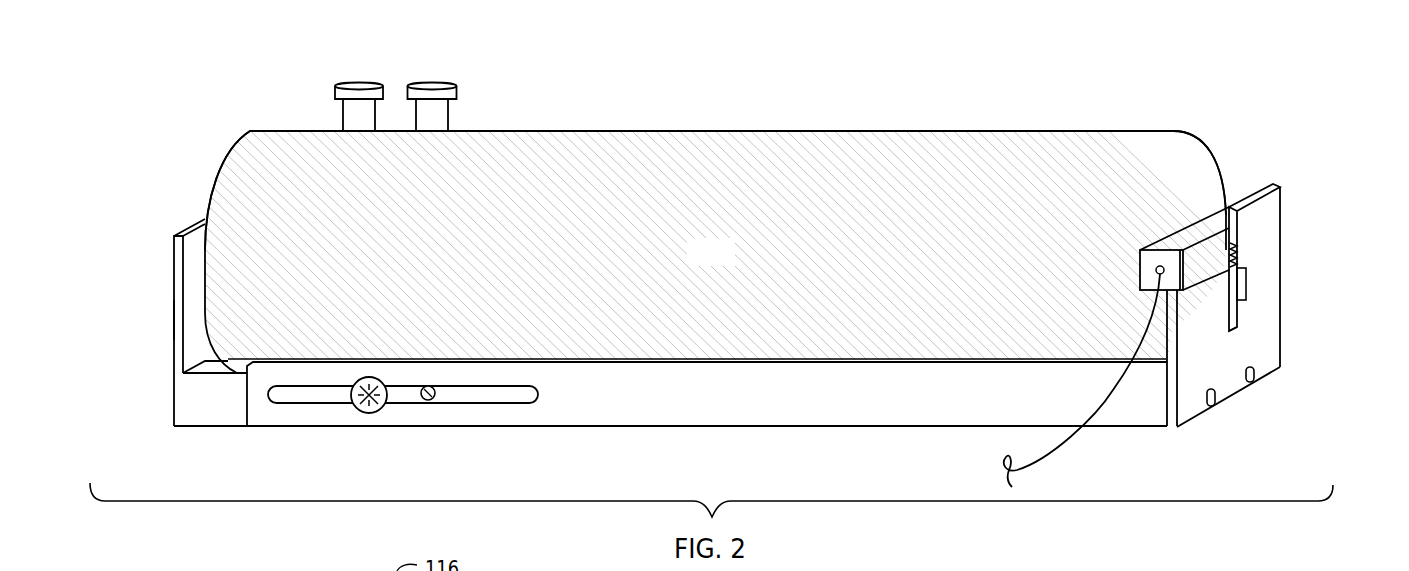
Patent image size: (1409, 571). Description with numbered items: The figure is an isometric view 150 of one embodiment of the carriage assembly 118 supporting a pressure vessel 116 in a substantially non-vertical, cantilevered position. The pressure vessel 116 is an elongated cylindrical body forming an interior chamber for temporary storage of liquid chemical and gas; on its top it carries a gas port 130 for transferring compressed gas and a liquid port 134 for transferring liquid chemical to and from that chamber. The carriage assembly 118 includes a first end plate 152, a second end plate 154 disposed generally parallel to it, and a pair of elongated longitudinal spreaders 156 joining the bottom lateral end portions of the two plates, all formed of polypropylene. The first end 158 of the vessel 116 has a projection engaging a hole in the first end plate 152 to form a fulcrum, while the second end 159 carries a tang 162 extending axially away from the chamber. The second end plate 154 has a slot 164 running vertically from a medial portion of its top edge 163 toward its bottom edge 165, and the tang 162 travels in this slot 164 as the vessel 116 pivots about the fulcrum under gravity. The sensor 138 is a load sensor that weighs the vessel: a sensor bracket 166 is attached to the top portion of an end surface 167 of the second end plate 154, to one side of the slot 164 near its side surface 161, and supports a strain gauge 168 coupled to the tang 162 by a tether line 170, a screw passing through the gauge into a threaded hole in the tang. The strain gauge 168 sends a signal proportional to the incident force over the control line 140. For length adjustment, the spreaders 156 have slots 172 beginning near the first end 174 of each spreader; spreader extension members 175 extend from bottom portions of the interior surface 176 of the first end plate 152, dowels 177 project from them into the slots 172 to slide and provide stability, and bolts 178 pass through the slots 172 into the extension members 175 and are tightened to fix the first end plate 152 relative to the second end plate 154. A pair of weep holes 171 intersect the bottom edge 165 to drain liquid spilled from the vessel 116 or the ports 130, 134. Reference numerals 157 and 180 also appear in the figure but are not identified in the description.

The pressure vessel 116 is at (694, 263).
The carriage assembly 118 is at (171, 231).
The gas port 130 is at (357, 83).
The liquid port 134 is at (437, 83).
The sensor 138 is at (1248, 218).
The control line 140 is at (1077, 426).
The isometric view 150 is at (1272, 103).
The first end plate 152 is at (174, 298).
The second end plate 154 is at (1275, 326).
The elongated longitudinal spreaders 156 is at (715, 383).
The base top edge 157 is at (818, 360).
The first end 158 is at (255, 162).
The second end 159 is at (1178, 153).
The side surface 161 is at (1170, 403).
The tang 162 is at (1244, 283).
The top edge 163 is at (1250, 198).
The slot 164 is at (1233, 323).
The bottom edge 165 is at (1237, 393).
The sensor bracket 166 is at (1195, 295).
The end surface 167 is at (1192, 382).
The strain gauge 168 is at (1235, 236).
The tether line 170 is at (1236, 258).
The weep holes 171 is at (1257, 379).
The slots 172 is at (509, 396).
The first end 174 is at (257, 395).
The spreader extension members 175 is at (207, 402).
The interior surface 176 is at (197, 343).
The dowels 177 is at (428, 401).
The bolts 178 is at (374, 405).
The element of next figure 180 is at (1187, 570).